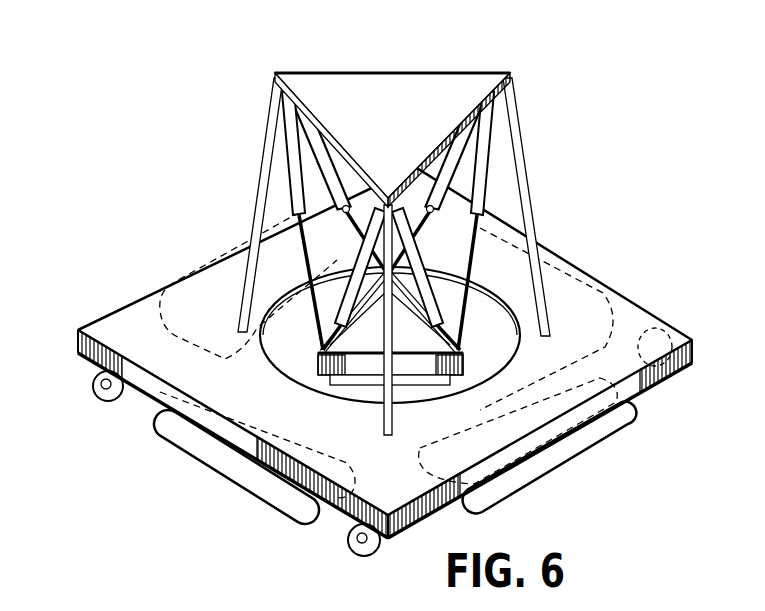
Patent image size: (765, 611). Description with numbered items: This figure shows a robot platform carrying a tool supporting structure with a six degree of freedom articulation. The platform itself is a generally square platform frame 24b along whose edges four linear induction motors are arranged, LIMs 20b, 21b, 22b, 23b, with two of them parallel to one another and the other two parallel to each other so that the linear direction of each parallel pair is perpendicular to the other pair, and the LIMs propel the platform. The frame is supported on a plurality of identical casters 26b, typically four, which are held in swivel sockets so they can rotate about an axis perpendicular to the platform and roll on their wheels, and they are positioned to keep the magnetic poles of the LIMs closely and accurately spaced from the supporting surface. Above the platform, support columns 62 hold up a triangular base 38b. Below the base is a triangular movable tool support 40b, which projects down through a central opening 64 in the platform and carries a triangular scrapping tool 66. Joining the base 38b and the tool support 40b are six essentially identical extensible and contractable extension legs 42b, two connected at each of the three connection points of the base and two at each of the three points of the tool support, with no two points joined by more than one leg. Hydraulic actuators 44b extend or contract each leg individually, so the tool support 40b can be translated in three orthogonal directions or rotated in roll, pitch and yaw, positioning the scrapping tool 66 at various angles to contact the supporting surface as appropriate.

The base 38b is at (381, 96).
The movable tool support 40b is at (433, 363).
The extension legs 42b is at (333, 200).
The hydraulic actuators 44b is at (318, 152).
The support columns 62 is at (261, 212).
The central opening 64 is at (294, 363).
The triangular scrapping tool 66 is at (431, 374).
The LIM 20b is at (557, 450).
The LIM 21b is at (220, 260).
The LIM 22b is at (566, 268).
The LIM 23b is at (230, 458).
The platform frame 24b is at (155, 394).
The casters 26b is at (112, 402).